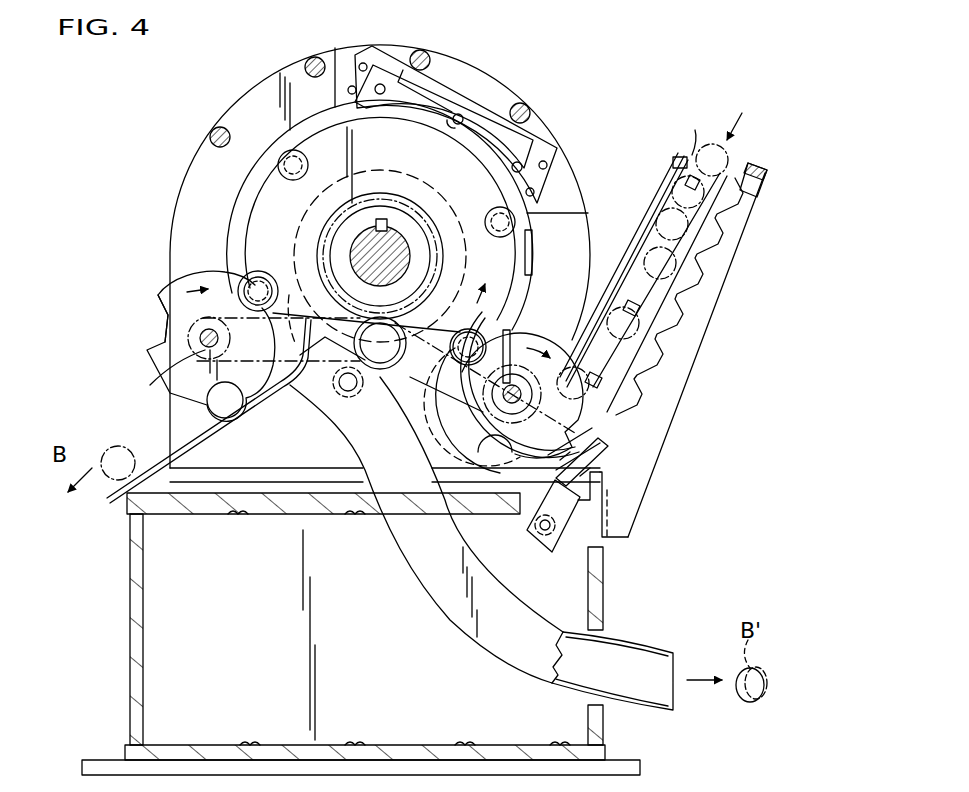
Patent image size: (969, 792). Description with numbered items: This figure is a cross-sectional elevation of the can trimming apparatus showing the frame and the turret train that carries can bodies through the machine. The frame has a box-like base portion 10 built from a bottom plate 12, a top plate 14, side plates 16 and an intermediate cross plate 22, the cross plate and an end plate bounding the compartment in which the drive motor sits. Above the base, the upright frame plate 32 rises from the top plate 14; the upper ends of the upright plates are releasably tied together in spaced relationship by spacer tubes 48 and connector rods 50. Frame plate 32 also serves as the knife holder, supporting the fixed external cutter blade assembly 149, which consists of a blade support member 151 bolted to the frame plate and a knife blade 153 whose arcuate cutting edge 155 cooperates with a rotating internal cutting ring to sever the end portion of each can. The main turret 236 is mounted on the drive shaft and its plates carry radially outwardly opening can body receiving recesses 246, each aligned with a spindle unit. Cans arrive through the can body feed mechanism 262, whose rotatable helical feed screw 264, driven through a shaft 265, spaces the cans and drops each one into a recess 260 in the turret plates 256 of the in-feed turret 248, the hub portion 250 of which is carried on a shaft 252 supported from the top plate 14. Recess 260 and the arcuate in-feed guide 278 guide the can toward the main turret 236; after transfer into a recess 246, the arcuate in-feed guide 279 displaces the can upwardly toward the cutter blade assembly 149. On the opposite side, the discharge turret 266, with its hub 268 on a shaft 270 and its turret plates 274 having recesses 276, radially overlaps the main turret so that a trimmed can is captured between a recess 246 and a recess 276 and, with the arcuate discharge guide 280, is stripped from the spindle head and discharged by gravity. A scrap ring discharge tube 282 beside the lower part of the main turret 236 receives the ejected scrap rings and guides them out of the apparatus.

The base portion 10 is at (101, 622).
The bottom plate 12 is at (125, 757).
The top plate 14 is at (130, 500).
The side plates 16 is at (132, 667).
The intermediate cross plate 22 is at (585, 718).
The upright frame plate 32 is at (352, 46).
The spacer tubes 48 is at (208, 136).
The connector rods 50 is at (222, 126).
The cutter blade assembly 149 is at (486, 90).
The blade support member 151 is at (433, 85).
The knife blade 153 is at (487, 115).
The arcuate cutting edge 155 is at (450, 110).
The main turret 236 is at (245, 212).
The can body receiving recesses 246 is at (250, 278).
The in-feed turret 248 is at (484, 336).
The hub portion 250 is at (534, 322).
The shaft 252 is at (420, 436).
The turret plates 256 is at (594, 458).
The can body receiving recesses 260 is at (655, 400).
The can body feed mechanism 262 is at (705, 118).
The helical feed screw 264 is at (700, 282).
The shaft 265 is at (562, 527).
The discharge turret 266 is at (146, 302).
The hub 268 is at (200, 340).
The shaft 270 is at (156, 378).
The turret plates 274 is at (173, 380).
The can body receiving recesses 276 is at (157, 316).
The arcuate in-feed guide 278 is at (460, 468).
The arcuate in-feed guide 279 is at (533, 265).
The discharge guide 280 is at (215, 445).
The scrap ring discharge tube 282 is at (445, 625).